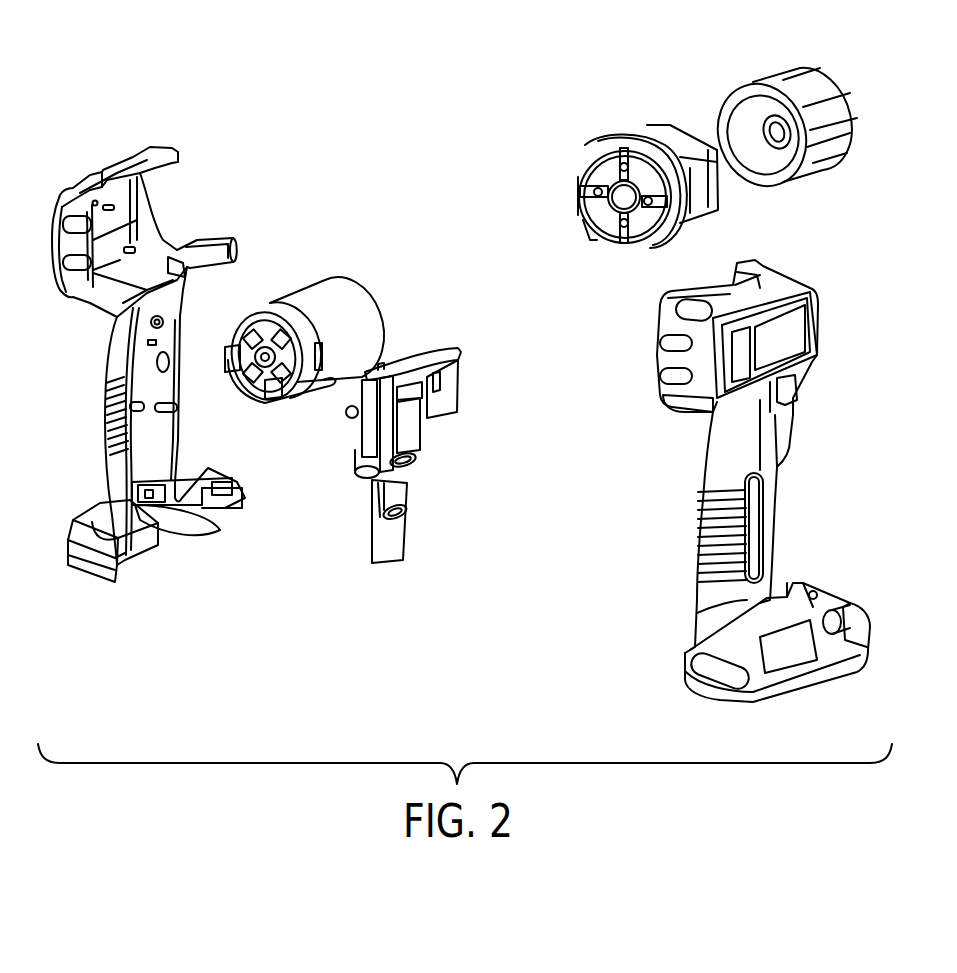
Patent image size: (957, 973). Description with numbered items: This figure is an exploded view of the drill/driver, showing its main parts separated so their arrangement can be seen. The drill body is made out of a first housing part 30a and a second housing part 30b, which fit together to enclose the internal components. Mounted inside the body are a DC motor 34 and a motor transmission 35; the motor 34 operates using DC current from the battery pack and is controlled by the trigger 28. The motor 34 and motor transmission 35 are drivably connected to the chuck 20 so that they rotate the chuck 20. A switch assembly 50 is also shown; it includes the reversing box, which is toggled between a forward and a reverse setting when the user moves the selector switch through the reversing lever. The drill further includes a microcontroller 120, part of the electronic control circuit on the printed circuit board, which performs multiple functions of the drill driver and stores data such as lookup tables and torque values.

The chuck 20 is at (830, 97).
The trigger 28 is at (450, 407).
The first housing part 30a is at (65, 192).
The second housing part 30b is at (790, 450).
The DC motor 34 is at (372, 303).
The motor transmission 35 is at (648, 130).
The switch assembly 50 is at (383, 567).
The microcontroller 120 is at (407, 512).